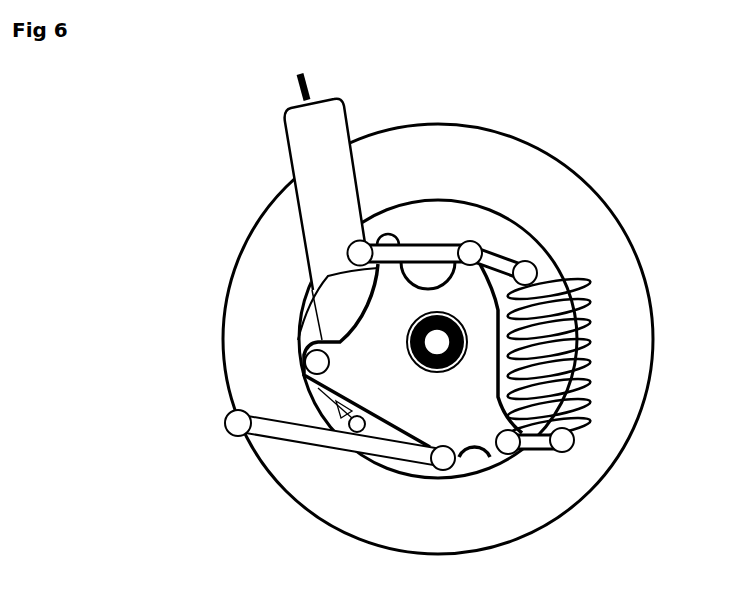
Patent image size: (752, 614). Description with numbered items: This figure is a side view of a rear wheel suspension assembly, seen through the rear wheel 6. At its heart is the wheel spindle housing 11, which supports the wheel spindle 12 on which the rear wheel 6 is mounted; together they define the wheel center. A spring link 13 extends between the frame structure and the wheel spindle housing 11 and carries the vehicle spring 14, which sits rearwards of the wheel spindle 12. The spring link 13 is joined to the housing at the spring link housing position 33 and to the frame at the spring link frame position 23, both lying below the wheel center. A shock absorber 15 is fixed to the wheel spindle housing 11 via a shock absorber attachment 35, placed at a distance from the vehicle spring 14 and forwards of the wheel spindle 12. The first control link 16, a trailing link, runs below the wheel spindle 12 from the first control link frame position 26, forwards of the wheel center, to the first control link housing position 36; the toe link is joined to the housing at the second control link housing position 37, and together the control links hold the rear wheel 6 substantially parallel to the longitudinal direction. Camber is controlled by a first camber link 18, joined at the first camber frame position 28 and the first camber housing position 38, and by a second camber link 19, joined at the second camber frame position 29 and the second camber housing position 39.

The rear wheel 6 is at (385, 128).
The wheel spindle housing 11 is at (397, 305).
The wheel spindle 12 is at (437, 342).
The spring link 13 is at (527, 447).
The vehicle spring 14 is at (583, 343).
The shock absorber 15 is at (322, 153).
The first control link 16 is at (310, 430).
The first camber link 18 is at (432, 254).
The second camber link 19 is at (493, 267).
The spring link frame position 23 is at (563, 443).
The first control link frame position 26 is at (236, 423).
The first camber frame position 28 is at (348, 252).
The second camber frame position 29 is at (512, 278).
The spring link housing position 33 is at (507, 453).
The shock absorber attachment 35 is at (349, 430).
The first control link housing position 36 is at (440, 467).
The second control link housing position 37 is at (317, 360).
The first camber housing position 38 is at (470, 250).
The second camber housing position 39 is at (390, 237).